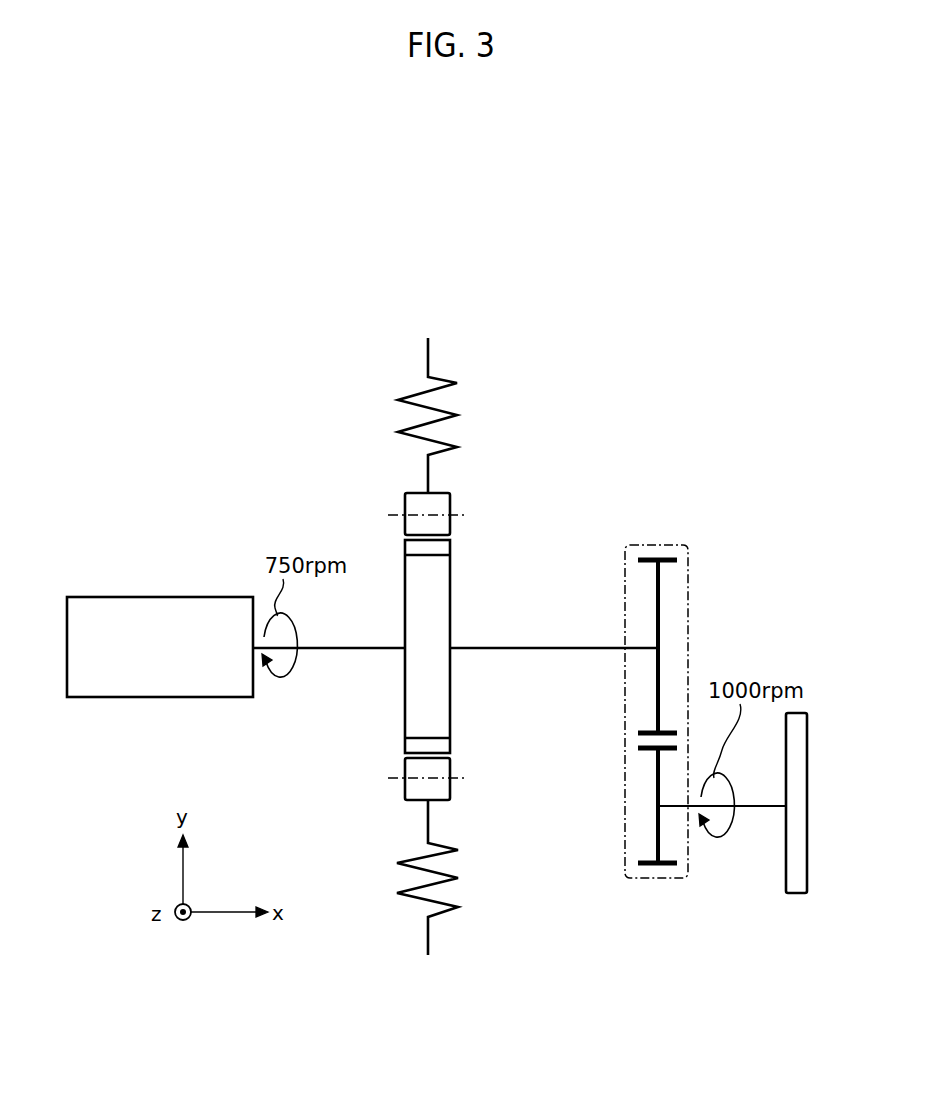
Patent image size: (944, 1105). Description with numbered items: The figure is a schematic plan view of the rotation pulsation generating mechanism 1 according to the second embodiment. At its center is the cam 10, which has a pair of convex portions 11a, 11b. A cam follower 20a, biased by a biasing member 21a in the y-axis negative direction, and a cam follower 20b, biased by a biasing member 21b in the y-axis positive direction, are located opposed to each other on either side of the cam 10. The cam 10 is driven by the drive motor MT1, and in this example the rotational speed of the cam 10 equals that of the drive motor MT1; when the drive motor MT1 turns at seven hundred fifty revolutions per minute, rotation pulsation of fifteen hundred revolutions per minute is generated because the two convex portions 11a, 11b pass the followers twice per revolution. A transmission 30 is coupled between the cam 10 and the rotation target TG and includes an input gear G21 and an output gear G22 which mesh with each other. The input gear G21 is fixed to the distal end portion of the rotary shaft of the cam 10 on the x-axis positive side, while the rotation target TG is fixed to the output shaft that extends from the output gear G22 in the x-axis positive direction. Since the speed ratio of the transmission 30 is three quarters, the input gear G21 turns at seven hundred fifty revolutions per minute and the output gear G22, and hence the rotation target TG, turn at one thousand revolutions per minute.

The rotation pulsation generating mechanism 1 is at (634, 484).
The cam 10 is at (445, 621).
The convex portion 11a is at (447, 551).
The convex portion 11b is at (447, 741).
The cam follower 20a is at (445, 505).
The cam follower 20b is at (447, 791).
The biasing member 21a is at (448, 411).
The biasing member 21b is at (447, 908).
The transmission 30 is at (665, 711).
The input gear G21 is at (655, 688).
The output gear G22 is at (655, 785).
The drive motor MT1 is at (160, 647).
The rotation target TG is at (805, 786).